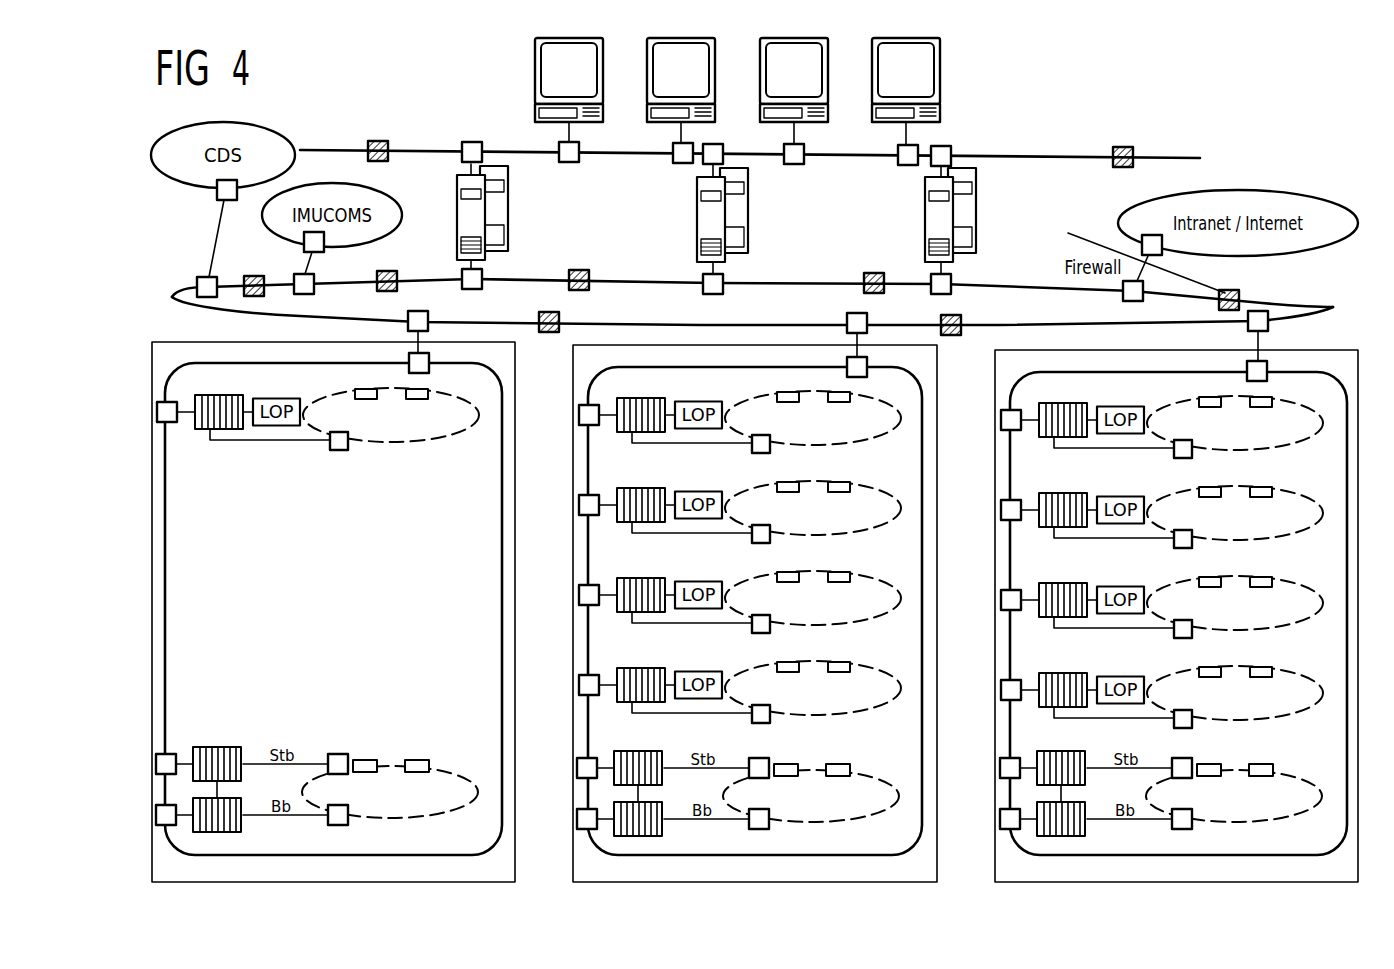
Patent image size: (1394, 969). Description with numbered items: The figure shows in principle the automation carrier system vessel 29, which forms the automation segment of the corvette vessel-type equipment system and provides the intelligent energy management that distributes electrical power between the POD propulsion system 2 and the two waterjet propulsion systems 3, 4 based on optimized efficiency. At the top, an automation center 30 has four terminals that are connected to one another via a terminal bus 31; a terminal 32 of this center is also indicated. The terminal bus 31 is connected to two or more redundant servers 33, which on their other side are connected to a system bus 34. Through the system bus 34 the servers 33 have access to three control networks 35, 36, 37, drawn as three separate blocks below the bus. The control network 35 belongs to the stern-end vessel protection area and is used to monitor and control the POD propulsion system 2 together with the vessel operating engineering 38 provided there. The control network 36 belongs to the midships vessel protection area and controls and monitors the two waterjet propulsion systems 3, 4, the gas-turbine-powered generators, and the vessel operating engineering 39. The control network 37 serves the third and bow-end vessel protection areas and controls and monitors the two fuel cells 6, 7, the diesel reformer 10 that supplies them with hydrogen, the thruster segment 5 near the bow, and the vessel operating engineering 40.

The POD propulsion segment 2 is at (305, 555).
The waterjet propulsion segment 3 is at (607, 587).
The waterjet propulsion segment 4 is at (607, 677).
The thruster segment 5 is at (1029, 680).
The fuel-cell segment 6 is at (1029, 410).
The fuel-cell segment 7 is at (1029, 500).
The diesel reformer 10 is at (1029, 590).
The automation carrier system vessel 29 is at (1252, 130).
The automation center 30 is at (498, 89).
The terminal bus 31 is at (1065, 156).
The operator workstation 32 is at (935, 91).
The redundant servers 33 is at (502, 217).
The system bus 34 is at (640, 278).
The control network 35 is at (339, 568).
The control network 36 is at (728, 613).
The control network 37 is at (1163, 585).
The vessel operating engineering 38 is at (182, 790).
The vessel operating engineering 39 is at (600, 795).
The vessel operating engineering 40 is at (1022, 795).